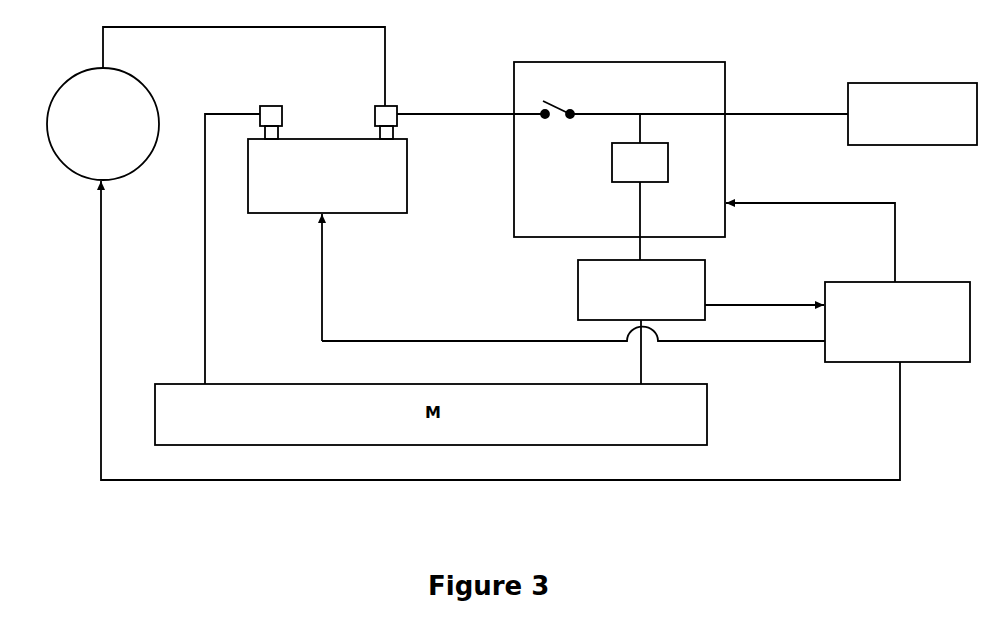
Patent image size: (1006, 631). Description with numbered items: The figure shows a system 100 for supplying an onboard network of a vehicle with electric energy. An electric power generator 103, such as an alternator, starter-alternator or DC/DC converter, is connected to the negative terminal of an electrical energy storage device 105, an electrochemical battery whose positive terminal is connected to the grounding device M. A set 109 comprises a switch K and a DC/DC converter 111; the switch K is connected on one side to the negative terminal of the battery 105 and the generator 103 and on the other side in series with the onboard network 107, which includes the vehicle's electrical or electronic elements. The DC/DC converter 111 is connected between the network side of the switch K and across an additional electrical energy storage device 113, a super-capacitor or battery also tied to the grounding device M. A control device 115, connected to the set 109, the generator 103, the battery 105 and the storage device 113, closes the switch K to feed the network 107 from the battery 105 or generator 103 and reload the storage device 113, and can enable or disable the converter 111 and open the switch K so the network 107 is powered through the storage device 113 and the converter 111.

The system 100 is at (839, 504).
The electric power generator 103 is at (103, 124).
The electrical energy storage device 105 is at (327, 159).
The onboard network 107 is at (912, 114).
The set 109 is at (643, 57).
The DC/DC converter 111 is at (640, 162).
The additional electrical energy storage device 113 is at (641, 290).
The control device 115 is at (897, 322).